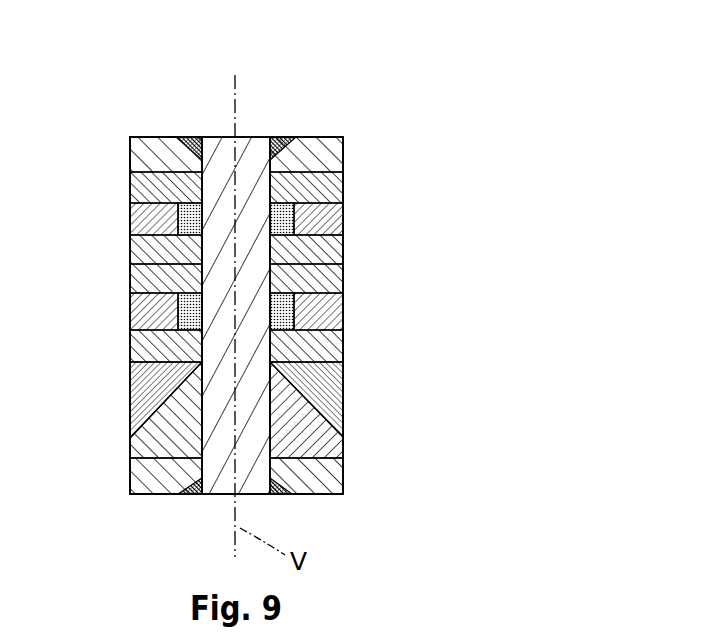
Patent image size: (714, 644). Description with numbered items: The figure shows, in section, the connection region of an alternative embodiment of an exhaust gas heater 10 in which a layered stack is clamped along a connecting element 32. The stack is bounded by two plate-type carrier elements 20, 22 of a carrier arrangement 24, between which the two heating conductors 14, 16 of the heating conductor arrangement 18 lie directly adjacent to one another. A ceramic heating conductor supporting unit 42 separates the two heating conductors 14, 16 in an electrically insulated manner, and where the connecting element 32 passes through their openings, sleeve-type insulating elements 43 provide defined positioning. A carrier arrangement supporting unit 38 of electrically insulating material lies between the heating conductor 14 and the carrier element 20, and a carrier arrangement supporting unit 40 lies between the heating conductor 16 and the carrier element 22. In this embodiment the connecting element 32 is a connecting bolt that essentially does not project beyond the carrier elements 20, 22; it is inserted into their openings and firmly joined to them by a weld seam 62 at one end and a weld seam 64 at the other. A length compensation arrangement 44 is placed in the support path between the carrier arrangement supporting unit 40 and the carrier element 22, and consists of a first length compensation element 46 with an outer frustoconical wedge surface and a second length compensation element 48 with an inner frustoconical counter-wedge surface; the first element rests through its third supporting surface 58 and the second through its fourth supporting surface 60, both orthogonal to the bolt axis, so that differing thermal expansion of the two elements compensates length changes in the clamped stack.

The exhaust gas heater 10 is at (500, 72).
The heating conductor 14 is at (343, 220).
The heating conductor 16 is at (343, 310).
The heating conductor arrangement 18 is at (418, 302).
The carrier element 20 is at (343, 155).
The carrier element 22 is at (343, 488).
The carrier arrangement 24 is at (117, 152).
The connecting element 32 is at (222, 497).
The carrier arrangement supporting unit 38 is at (130, 187).
The carrier arrangement supporting unit 40 is at (343, 350).
The heating conductor supporting unit 42 is at (343, 263).
The sleeve-type insulating element 43 is at (178, 217).
The length compensation arrangement 44 is at (128, 410).
The first length compensation element 46 is at (343, 453).
The second length compensation element 48 is at (345, 398).
The third supporting surface 58 is at (133, 478).
The fourth supporting surface 60 is at (130, 352).
The weld seam 62 is at (280, 137).
The weld seam 64 is at (278, 496).